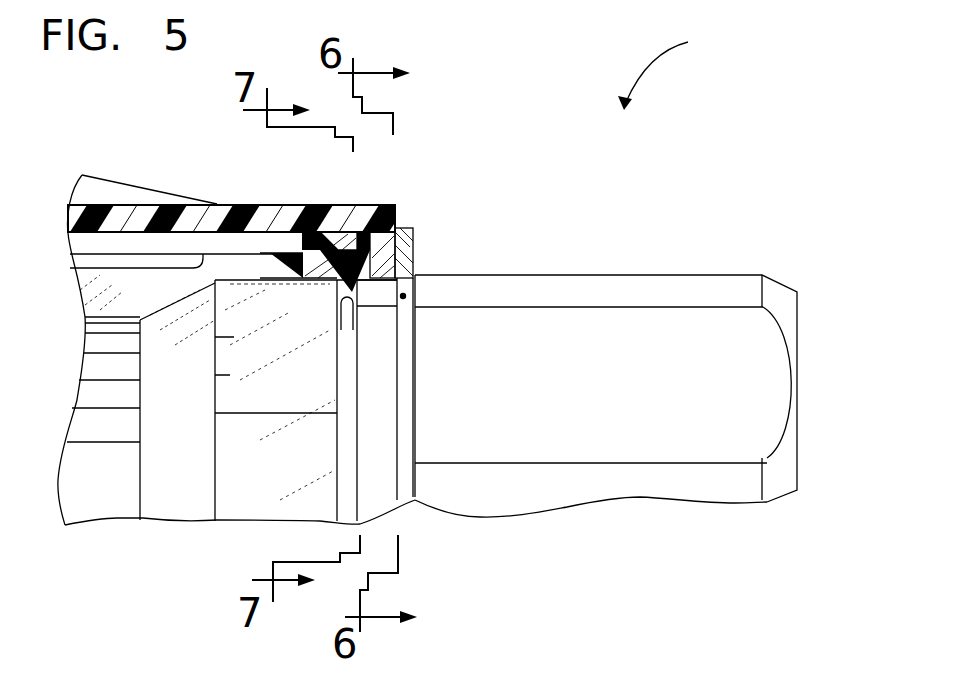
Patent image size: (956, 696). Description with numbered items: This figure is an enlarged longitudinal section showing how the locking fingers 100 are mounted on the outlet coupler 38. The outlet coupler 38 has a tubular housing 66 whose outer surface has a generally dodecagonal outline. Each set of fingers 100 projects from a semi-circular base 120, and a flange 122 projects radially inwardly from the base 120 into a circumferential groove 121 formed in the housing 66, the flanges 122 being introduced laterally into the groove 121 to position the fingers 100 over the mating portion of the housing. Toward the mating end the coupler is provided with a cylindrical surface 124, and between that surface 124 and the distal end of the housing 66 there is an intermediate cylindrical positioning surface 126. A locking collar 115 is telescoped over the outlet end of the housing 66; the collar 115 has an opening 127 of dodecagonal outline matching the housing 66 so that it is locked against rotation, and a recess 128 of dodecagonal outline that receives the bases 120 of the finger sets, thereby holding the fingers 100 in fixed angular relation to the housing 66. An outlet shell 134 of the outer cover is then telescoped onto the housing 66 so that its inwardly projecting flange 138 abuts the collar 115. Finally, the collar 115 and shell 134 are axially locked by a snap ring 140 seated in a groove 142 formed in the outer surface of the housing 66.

The outlet coupler 38 is at (673, 68).
The tubular housing 66 is at (730, 275).
The locking fingers 100 is at (137, 283).
The locking collar 115 is at (362, 206).
The semi-circular base 120 is at (265, 263).
The circumferential groove 121 is at (337, 299).
The flange 122 is at (360, 290).
The cylindrical surface 124 is at (223, 278).
The positioning surface 126 is at (110, 313).
The opening 127 is at (369, 268).
The recess 128 is at (310, 281).
The outlet shell 134 is at (185, 266).
The flange 138 is at (413, 240).
The snap ring 140 is at (415, 257).
The groove 142 is at (405, 295).